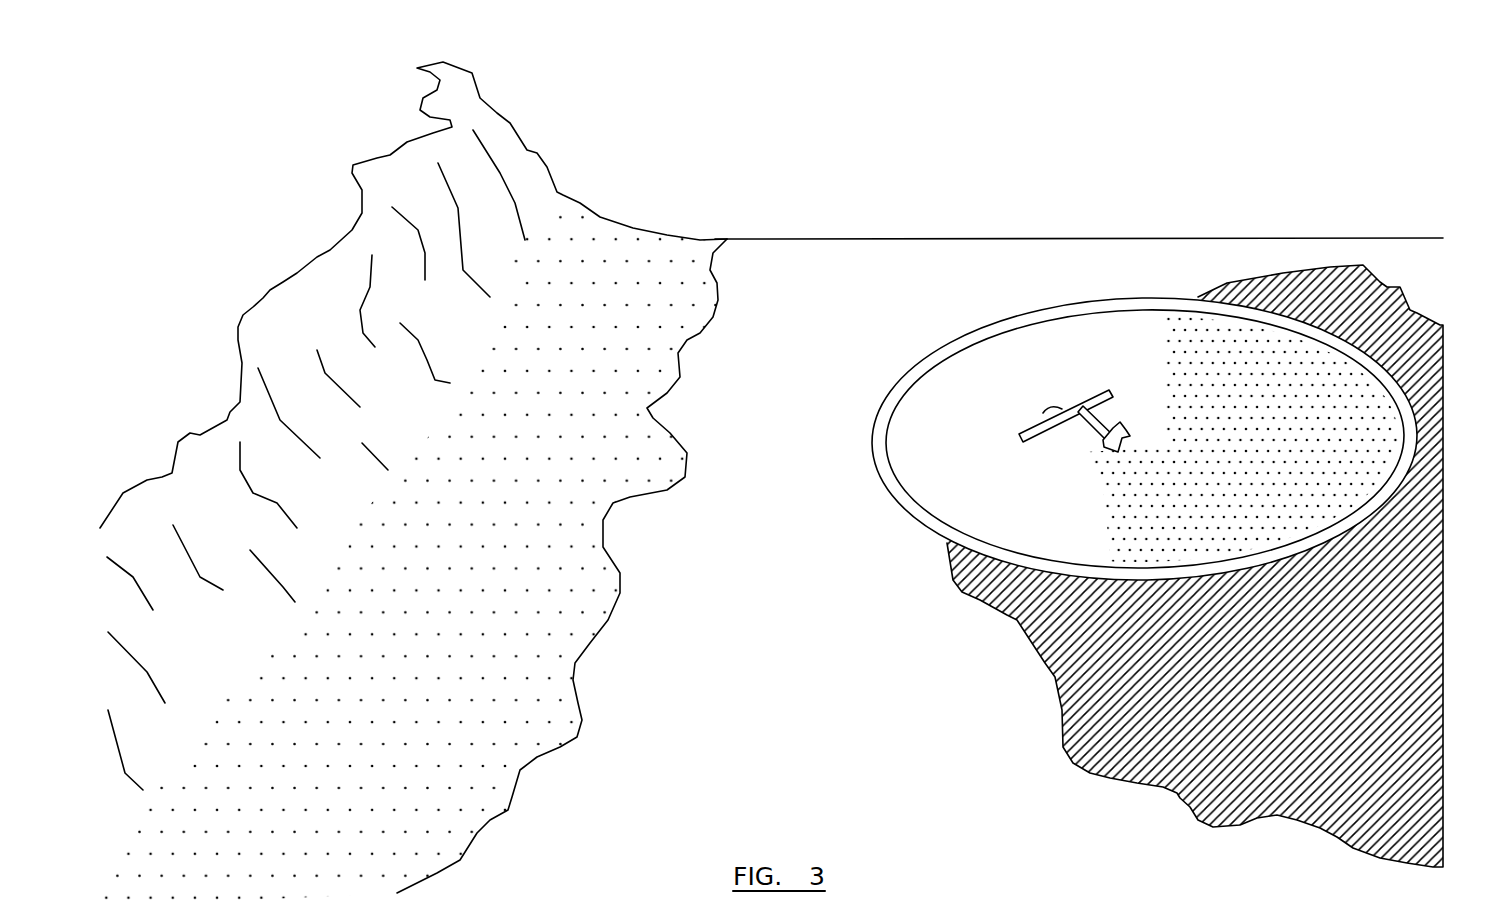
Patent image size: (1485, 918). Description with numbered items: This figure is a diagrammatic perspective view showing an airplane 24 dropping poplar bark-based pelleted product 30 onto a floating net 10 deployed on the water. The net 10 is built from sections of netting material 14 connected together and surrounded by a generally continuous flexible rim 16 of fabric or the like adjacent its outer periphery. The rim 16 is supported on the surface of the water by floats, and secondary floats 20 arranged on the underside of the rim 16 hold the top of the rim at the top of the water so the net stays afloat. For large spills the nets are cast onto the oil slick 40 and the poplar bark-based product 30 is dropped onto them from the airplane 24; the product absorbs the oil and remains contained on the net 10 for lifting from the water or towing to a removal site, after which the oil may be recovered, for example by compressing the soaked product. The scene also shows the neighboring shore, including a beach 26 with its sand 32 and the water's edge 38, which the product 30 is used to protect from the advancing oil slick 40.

The net 10 is at (1103, 372).
The netting material 14 is at (947, 497).
The flexible rim 16 is at (877, 470).
The secondary floats 20 is at (888, 275).
The airplane 24 is at (1082, 395).
The beach 26 is at (596, 240).
The poplar bark-based product 30 is at (1133, 492).
The sand 32 is at (658, 253).
The water's edge 38 is at (718, 283).
The oil slick 40 is at (1410, 315).